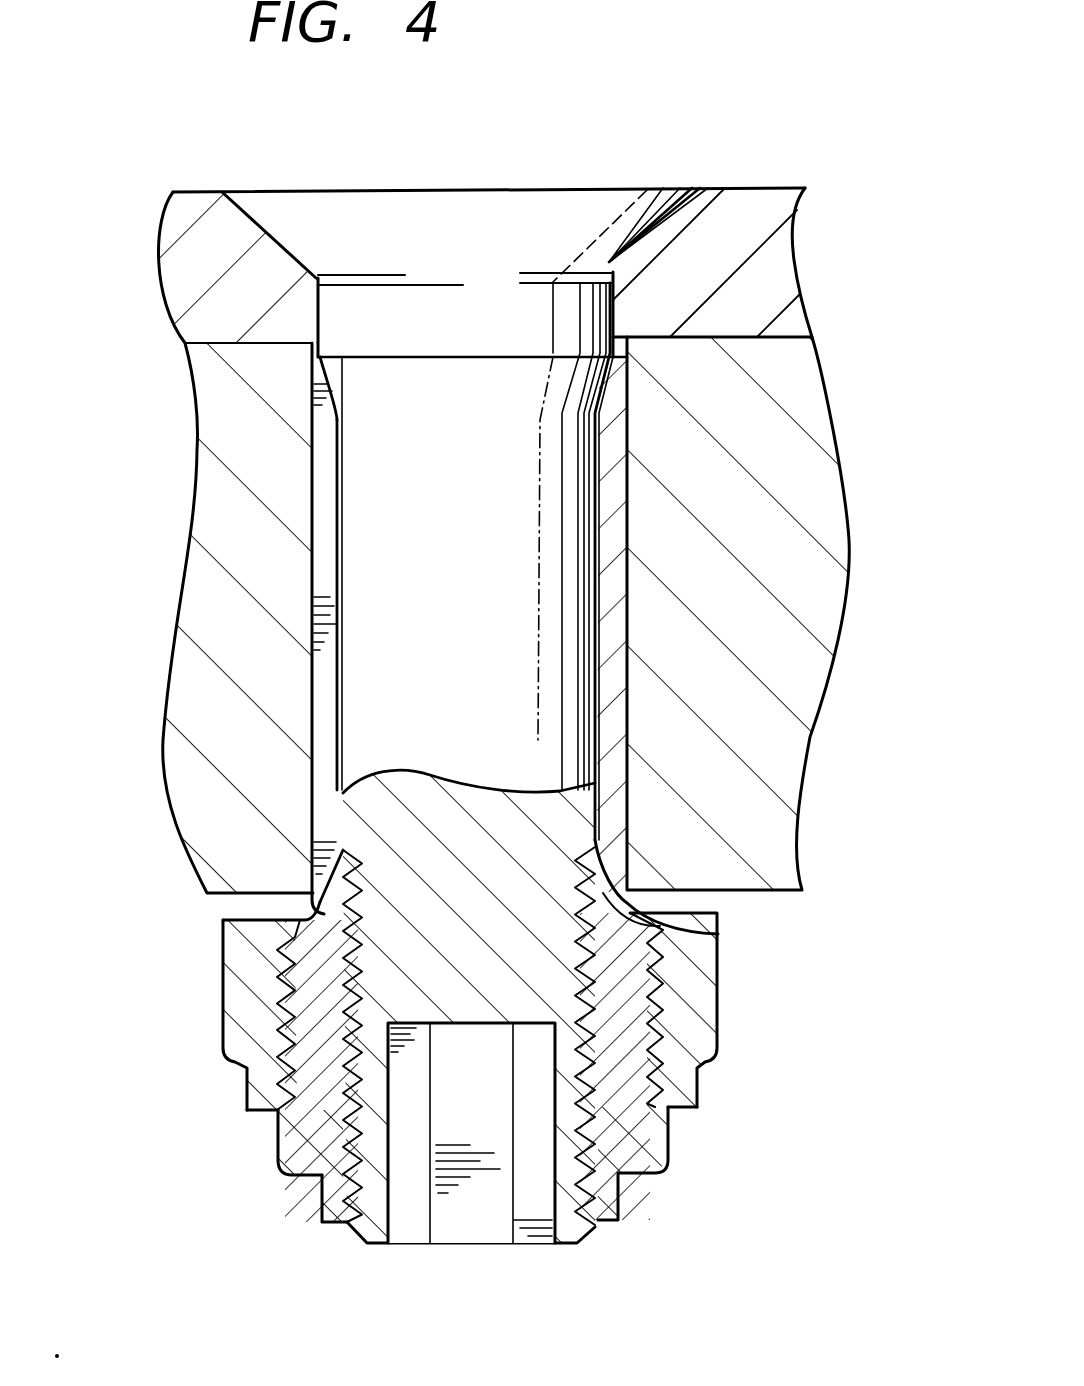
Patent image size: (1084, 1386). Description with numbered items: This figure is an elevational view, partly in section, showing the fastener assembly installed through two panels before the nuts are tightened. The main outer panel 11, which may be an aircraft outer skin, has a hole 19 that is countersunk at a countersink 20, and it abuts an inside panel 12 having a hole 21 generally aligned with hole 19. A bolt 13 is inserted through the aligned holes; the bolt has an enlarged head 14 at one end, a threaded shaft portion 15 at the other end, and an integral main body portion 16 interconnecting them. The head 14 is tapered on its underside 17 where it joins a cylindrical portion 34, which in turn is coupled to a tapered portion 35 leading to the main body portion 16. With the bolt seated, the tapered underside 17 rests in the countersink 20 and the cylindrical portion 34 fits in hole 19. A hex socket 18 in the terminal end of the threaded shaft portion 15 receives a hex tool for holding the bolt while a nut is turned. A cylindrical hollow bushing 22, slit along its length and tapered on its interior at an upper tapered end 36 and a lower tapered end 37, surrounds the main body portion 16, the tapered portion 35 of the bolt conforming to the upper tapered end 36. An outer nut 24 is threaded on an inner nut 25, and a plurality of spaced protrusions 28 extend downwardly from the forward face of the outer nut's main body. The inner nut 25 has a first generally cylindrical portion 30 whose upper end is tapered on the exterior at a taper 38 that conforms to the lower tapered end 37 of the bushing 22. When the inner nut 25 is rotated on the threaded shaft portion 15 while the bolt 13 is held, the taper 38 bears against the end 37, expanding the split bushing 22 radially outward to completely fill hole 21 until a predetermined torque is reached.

The panel 11 is at (768, 262).
The inside panel 12 is at (798, 474).
The bolt 13 is at (667, 182).
The enlarged head 14 is at (477, 705).
The threaded shaft portion 15 is at (375, 1225).
The main body portion 16 is at (486, 646).
The underside 17 is at (252, 228).
The hex socket 18 is at (555, 1190).
The hole 19 is at (320, 312).
The countersink 20 is at (284, 258).
The hole 21 is at (315, 717).
The cylindrical hollow bushing 22 is at (288, 486).
The outer nut 24 is at (212, 984).
The inner nut 25 is at (268, 1138).
The spaced protrusions 28 is at (698, 1087).
The first generally cylindrical portion 30 is at (630, 912).
The cylindrical portion 34 is at (441, 317).
The tapered portion 35 is at (498, 385).
The upper tapered end 36 is at (313, 385).
The lower tapered end 37 is at (313, 870).
The taper 38 is at (620, 862).